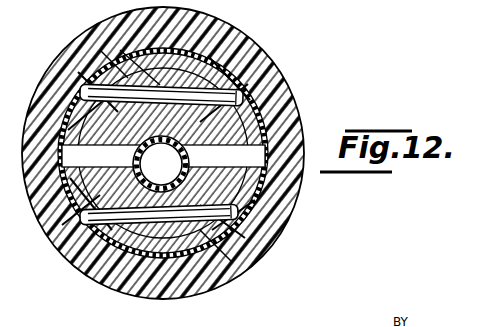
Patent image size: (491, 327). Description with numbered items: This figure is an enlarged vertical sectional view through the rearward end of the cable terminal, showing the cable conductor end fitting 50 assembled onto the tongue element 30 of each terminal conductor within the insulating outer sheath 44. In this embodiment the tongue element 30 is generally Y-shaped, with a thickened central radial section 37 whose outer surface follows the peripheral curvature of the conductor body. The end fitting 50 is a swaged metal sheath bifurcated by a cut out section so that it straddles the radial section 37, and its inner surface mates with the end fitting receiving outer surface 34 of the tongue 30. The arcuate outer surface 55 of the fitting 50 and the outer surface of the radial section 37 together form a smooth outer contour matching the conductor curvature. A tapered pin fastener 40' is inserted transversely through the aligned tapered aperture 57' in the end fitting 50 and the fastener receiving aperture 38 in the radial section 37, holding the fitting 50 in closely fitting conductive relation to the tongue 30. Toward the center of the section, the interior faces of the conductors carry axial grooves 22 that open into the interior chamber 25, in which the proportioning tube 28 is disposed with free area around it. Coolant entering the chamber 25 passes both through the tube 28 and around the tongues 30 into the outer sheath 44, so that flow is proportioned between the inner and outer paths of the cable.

The axial groove 22 is at (214, 153).
The interior chamber 25 is at (112, 153).
The proportioning tube 28 is at (172, 150).
The tongue element 30 is at (299, 188).
The end fitting receiving outer surface 34 is at (72, 130).
The radial section 37 is at (167, 48).
The fastener receiving aperture 38 is at (168, 86).
The tapered pin fastener 40' is at (251, 149).
The outer sheath 44 is at (212, 14).
The cable conductor end fitting 50 is at (108, 56).
The outer surface of end fitting 55 is at (121, 50).
The tapered aperture 57' is at (88, 187).